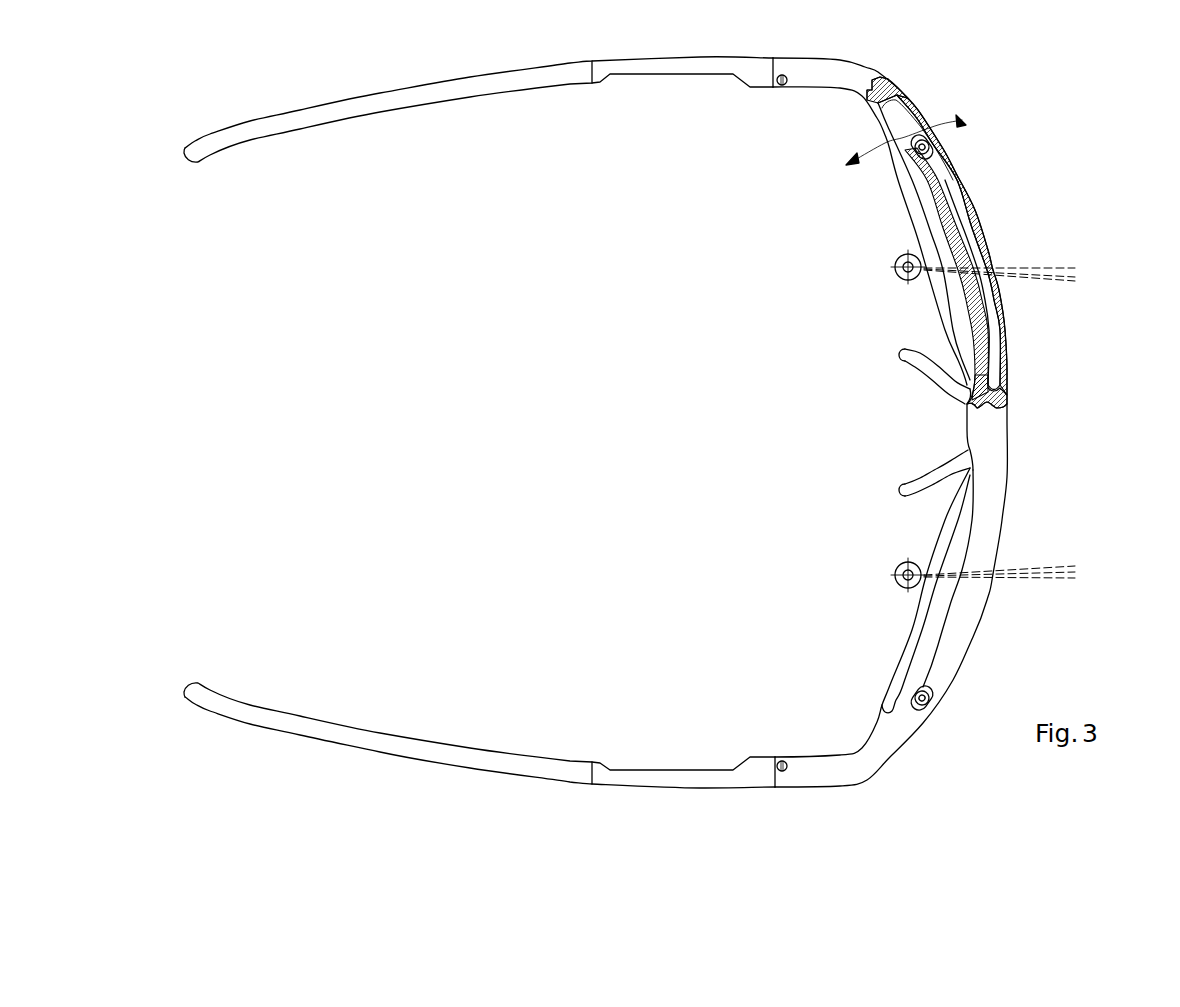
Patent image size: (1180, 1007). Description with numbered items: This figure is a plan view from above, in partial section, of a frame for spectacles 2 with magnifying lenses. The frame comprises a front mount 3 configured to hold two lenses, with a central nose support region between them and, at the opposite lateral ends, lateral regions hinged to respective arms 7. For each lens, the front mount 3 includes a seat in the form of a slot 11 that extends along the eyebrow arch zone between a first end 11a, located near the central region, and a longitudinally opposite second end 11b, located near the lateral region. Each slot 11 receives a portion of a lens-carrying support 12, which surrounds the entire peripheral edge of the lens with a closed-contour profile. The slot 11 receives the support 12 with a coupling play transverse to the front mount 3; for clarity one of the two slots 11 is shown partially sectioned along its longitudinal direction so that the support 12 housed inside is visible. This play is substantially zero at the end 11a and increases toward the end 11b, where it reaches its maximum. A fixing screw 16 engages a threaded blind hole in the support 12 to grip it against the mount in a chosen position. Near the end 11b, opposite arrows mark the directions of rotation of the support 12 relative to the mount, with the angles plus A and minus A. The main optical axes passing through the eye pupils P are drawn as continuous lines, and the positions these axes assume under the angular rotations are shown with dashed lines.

The spectacles 2 is at (669, 423).
The front mount 3 is at (1011, 477).
The arm 7 is at (520, 77).
The slot 11 is at (897, 90).
The first end of the slot 11a is at (970, 401).
The second end of the slot 11b is at (862, 104).
The lens-carrying support 12 is at (946, 175).
The fixing screw 16 is at (913, 152).
The eye pupil P is at (898, 277).